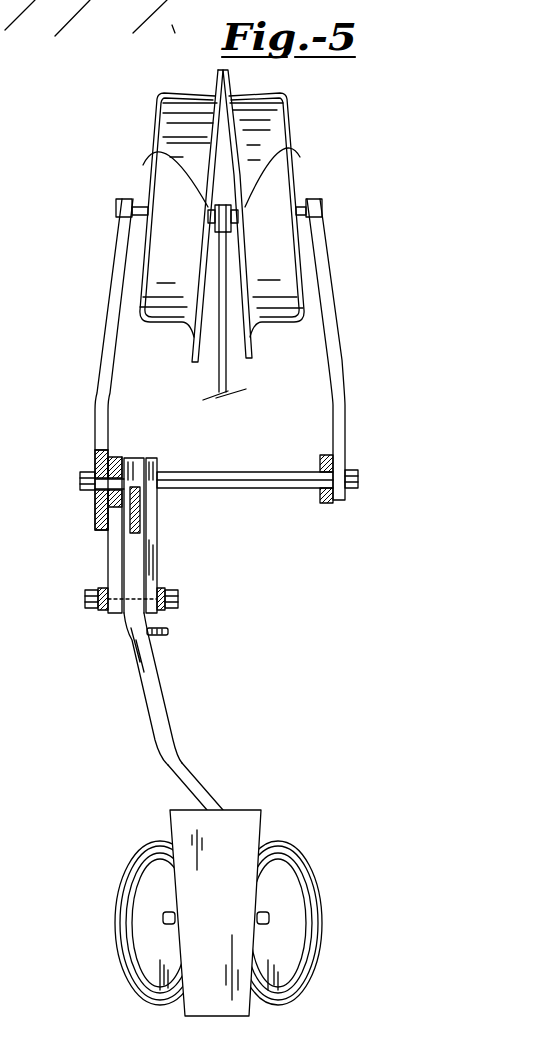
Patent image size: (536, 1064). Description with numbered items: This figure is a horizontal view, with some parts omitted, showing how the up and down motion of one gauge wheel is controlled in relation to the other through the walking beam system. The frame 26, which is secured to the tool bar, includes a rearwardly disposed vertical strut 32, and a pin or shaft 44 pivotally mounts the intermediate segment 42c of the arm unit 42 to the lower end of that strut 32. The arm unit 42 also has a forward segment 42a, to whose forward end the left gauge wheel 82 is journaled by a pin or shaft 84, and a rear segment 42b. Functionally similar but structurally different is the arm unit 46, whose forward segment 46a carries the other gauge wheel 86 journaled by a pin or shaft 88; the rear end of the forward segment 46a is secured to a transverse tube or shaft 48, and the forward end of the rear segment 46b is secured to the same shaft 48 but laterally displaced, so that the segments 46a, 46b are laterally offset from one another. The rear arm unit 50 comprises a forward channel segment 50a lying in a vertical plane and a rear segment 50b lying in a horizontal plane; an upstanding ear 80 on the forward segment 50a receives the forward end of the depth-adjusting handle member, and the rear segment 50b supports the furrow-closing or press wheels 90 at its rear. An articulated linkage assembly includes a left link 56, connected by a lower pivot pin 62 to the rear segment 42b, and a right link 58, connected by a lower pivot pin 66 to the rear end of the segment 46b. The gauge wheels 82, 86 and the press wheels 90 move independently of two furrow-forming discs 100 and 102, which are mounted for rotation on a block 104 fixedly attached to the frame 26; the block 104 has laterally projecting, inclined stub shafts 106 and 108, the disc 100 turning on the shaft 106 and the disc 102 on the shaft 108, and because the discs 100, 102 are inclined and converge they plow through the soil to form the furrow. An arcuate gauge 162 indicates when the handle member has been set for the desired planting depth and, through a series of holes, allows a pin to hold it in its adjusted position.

The frame 26 is at (238, 377).
The rearwardly disposed vertical strut 32 is at (115, 457).
The arm unit 42 is at (67, 406).
The forward segment of arm unit 42a is at (105, 330).
The rear segment of arm unit 42b is at (107, 555).
The intermediate segment of arm unit 42c is at (95, 440).
The pin or shaft 44 is at (80, 478).
The arm unit 46 is at (282, 406).
The forward segment of arm unit 46a is at (335, 337).
The rear segment of arm unit 46b is at (158, 558).
The transverse tube or shaft 48 is at (283, 490).
The rear arm unit 50 is at (211, 741).
The forward channel segment 50a is at (152, 712).
The rear segment of rear arm unit 50b is at (177, 783).
The left link 56 is at (105, 612).
The right link 58 is at (162, 610).
The lower pivot pin 62 is at (85, 600).
The lower pivot pin 66 is at (178, 600).
The upstanding ear 80 is at (142, 532).
The left gauge wheel 82 is at (157, 117).
The pin or shaft 84 is at (115, 203).
The gauge wheel 86 is at (292, 137).
The pin or shaft 88 is at (322, 212).
The furrow-closing or press wheel 90 is at (113, 915).
The furrow-forming disc 100 is at (196, 363).
The furrow-forming disc 102 is at (248, 360).
The block 104 is at (229, 238).
The stub shaft 106 is at (157, 179).
The stub shaft 108 is at (289, 177).
The arcuate gauge 162 is at (164, 637).